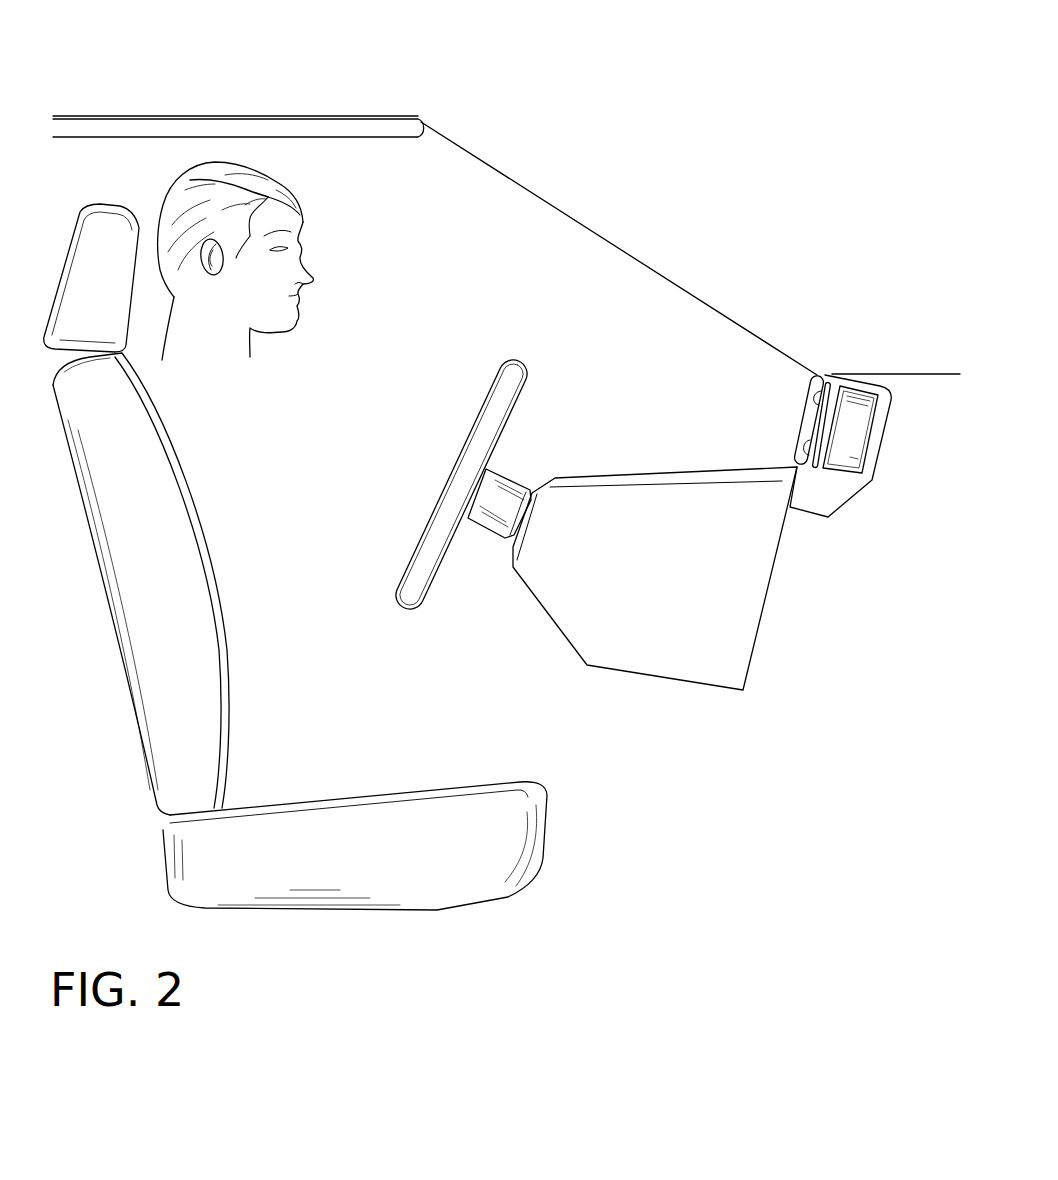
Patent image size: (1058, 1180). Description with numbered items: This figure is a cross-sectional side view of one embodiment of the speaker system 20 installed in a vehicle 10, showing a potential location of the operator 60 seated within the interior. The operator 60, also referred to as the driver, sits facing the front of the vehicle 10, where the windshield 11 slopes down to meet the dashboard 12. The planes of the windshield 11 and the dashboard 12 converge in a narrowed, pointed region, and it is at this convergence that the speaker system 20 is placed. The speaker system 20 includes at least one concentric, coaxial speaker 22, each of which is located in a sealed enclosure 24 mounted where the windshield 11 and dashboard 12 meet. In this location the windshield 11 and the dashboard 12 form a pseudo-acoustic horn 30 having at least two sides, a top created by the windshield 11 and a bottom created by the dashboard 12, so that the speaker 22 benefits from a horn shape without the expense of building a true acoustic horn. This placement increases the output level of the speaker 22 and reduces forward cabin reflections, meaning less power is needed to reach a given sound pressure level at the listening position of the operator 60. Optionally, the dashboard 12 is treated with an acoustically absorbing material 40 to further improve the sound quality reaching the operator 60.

The vehicle 10 is at (497, 88).
The windshield 11 is at (590, 227).
The dashboard 12 is at (667, 483).
The speaker system 20 is at (832, 426).
The concentric, coaxial speaker 22 is at (800, 413).
The sealed enclosure 24 is at (848, 505).
The pseudo-acoustic horn 30 is at (540, 317).
The acoustically absorbing material 40 is at (655, 545).
The operator 60 is at (303, 203).